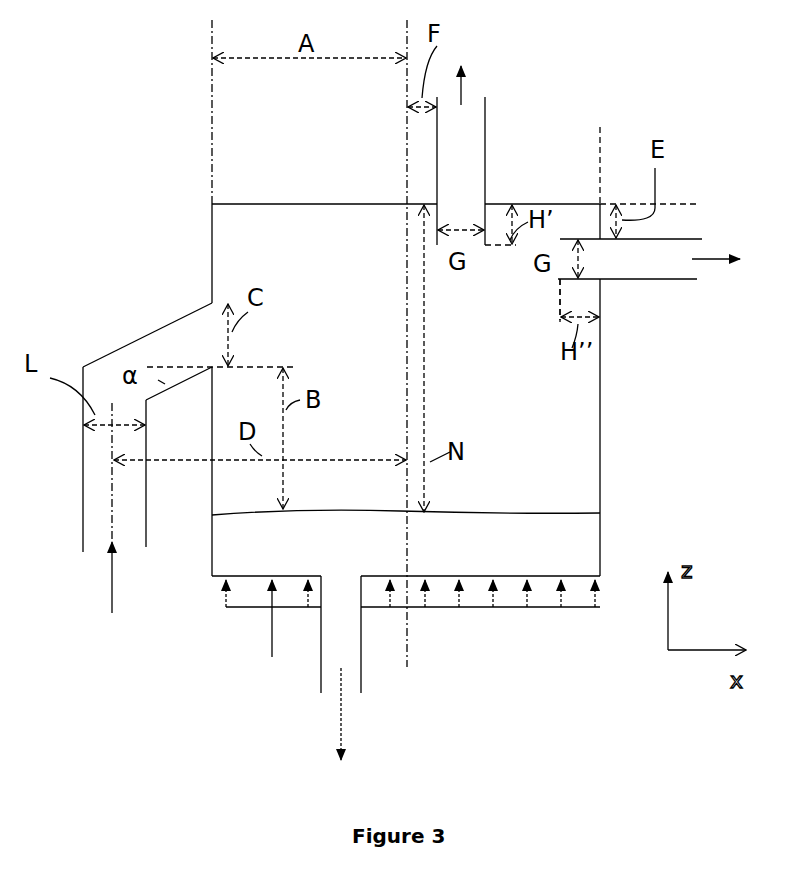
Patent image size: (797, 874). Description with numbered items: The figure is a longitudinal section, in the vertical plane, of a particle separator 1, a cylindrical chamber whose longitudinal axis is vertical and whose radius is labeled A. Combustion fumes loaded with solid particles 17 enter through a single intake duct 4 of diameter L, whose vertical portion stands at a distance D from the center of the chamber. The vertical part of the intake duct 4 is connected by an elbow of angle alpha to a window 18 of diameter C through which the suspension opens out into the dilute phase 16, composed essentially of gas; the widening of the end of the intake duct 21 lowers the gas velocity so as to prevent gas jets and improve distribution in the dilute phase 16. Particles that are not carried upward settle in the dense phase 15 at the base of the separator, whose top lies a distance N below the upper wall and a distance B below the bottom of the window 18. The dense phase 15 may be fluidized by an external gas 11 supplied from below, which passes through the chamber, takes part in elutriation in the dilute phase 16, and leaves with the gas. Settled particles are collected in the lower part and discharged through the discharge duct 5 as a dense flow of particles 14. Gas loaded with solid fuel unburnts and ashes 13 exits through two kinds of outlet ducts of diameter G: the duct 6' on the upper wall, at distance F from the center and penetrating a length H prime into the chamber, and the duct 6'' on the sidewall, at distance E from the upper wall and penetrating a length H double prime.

The particle separator 1 is at (212, 232).
The intake duct 4 is at (83, 478).
The discharge duct 5 is at (364, 660).
The outlet duct sited on the upper wall 6' is at (490, 171).
The outlet duct sited on the sidewall 6'' is at (630, 301).
The external gas 11 is at (270, 641).
The gas loaded with solid fuel unburnts and ashes 13 is at (470, 95).
The dense flow of particles 14 is at (343, 718).
The dense phase 15 is at (406, 538).
The dilute phase 16 is at (529, 323).
The combustion fumes loaded with solid particles 17 is at (110, 582).
The window 18 is at (212, 335).
The widening of the end of the intake duct 21 is at (150, 343).